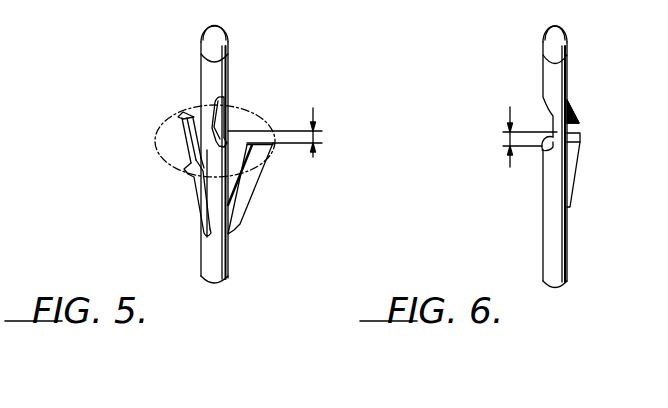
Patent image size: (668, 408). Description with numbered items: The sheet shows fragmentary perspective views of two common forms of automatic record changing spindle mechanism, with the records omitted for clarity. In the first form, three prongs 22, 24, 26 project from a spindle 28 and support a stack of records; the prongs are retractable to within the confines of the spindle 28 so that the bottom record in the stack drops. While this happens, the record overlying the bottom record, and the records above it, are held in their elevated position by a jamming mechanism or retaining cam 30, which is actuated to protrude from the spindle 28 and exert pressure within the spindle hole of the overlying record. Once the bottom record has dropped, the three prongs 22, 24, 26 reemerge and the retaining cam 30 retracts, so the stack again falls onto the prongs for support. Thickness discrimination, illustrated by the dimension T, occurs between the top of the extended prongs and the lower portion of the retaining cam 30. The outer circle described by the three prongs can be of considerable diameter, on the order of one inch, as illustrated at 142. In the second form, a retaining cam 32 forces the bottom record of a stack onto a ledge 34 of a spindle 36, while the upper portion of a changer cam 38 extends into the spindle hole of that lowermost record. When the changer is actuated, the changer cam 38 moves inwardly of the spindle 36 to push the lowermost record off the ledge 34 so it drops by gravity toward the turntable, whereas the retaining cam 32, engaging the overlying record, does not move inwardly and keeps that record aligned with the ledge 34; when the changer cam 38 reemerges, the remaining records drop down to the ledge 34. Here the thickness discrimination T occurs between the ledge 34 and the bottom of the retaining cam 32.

In FIG. 5, the prong 22 is at (184, 117).
In FIG. 5, the prong 24 is at (193, 190).
In FIG. 5, the prong 26 is at (245, 188).
In FIG. 5, the spindle 28 is at (208, 42).
In FIG. 5, the retaining cam 30 is at (228, 118).
In FIG. 5, the outer circle 142 is at (157, 143).
In FIG. 6, the retaining cam 32 is at (578, 127).
In FIG. 6, the ledge 34 is at (544, 150).
In FIG. 6, the spindle 36 is at (567, 48).
In FIG. 6, the changer cam 38 is at (577, 160).
In FIG. 5, the thickness discrimination dimension T is at (318, 138).
In FIG. 6, the thickness discrimination dimension T is at (503, 133).